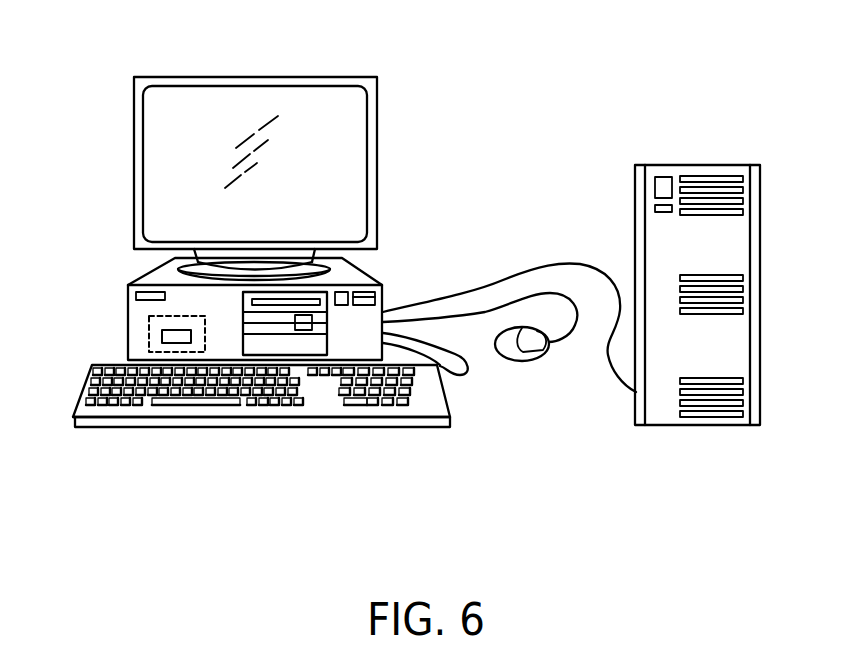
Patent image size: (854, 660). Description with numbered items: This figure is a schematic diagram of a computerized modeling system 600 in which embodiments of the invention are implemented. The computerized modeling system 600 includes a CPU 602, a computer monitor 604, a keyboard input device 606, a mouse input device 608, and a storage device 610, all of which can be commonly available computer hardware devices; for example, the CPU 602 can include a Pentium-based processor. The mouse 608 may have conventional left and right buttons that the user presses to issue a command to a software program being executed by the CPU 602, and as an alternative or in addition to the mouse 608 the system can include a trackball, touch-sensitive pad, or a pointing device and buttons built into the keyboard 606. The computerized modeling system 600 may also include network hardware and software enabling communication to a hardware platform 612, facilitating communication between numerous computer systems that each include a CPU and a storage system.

The computerized modeling system 600 is at (410, 47).
The CPU 602 is at (162, 336).
The computer monitor 604 is at (348, 148).
The keyboard input device 606 is at (86, 381).
The mouse input device 608 is at (522, 360).
The storage device 610 is at (323, 338).
The hardware platform 612 is at (690, 165).